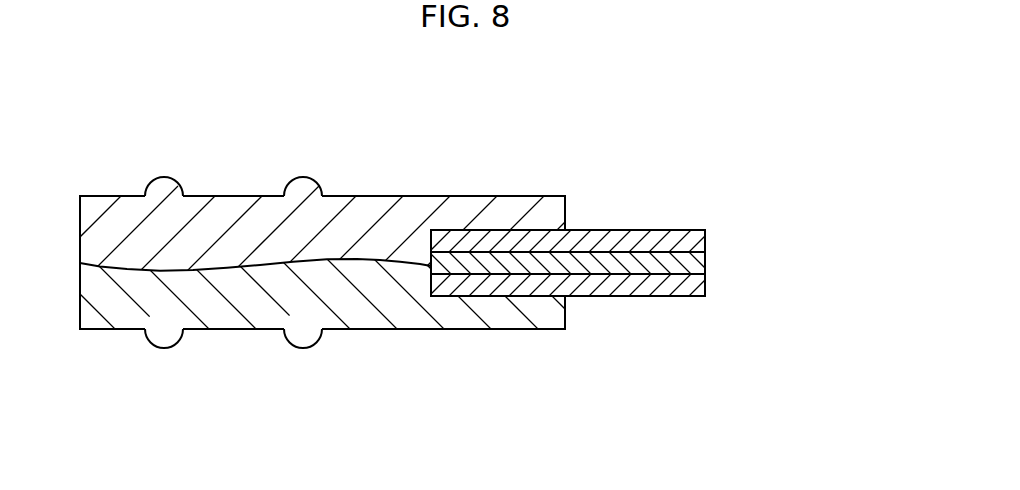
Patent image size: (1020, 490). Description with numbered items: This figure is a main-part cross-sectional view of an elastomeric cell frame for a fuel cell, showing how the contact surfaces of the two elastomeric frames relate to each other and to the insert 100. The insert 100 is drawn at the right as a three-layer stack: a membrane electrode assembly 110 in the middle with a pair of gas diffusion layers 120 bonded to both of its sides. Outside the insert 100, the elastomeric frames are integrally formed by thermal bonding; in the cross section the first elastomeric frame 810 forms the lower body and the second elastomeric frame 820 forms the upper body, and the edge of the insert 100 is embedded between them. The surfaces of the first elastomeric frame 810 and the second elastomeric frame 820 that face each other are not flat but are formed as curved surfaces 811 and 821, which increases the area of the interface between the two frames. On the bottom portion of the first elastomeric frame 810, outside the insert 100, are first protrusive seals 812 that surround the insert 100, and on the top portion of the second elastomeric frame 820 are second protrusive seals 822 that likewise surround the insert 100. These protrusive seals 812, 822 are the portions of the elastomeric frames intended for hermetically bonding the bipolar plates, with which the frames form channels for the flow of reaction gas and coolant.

The insert 100 is at (643, 269).
The membrane electrode assembly 110 is at (692, 262).
The gas diffusion layers 120 is at (694, 243).
The first elastomeric frame 810 is at (108, 312).
The curved surface 811 is at (257, 191).
The first protrusive seals 812 is at (297, 340).
The second elastomeric frame 820 is at (108, 210).
The curved surface 821 is at (357, 259).
The second protrusive seals 822 is at (297, 185).